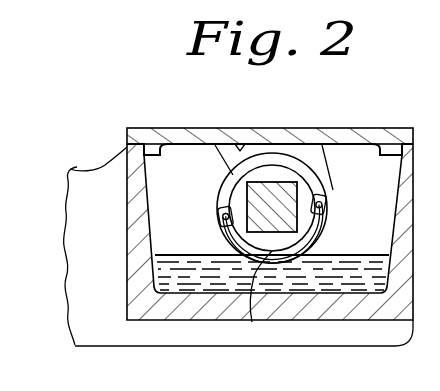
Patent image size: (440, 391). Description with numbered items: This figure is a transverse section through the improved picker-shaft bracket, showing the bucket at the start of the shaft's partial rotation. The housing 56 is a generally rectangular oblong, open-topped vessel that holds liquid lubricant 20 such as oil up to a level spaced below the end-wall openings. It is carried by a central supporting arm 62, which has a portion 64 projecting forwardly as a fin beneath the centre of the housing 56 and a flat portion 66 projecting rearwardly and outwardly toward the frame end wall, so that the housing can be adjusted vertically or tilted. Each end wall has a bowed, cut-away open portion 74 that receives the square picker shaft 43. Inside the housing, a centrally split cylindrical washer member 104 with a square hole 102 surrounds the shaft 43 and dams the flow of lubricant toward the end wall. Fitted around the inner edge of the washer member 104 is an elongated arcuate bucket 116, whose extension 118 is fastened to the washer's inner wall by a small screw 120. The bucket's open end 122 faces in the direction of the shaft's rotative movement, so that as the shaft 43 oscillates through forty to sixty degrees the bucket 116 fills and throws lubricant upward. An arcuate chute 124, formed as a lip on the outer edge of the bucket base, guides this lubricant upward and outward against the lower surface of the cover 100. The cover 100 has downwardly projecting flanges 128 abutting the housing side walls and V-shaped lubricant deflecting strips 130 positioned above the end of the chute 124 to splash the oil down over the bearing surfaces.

The liquid 20 is at (213, 318).
The picker shaft 43 is at (320, 187).
The housing 56 is at (342, 296).
The central supporting arm 62 is at (77, 167).
The forwardly projecting portion 64 is at (273, 343).
The flat portion 66 is at (93, 338).
The open portion 74 is at (318, 153).
The cover 100 is at (242, 147).
The hole 102 is at (233, 191).
The washer member 104 is at (228, 176).
The bucket 116 is at (316, 249).
The extension 118 is at (220, 216).
The small screw 120 is at (326, 210).
The open end 122 is at (253, 297).
The arcuate chute 124 is at (238, 238).
The flanges 128 is at (156, 143).
The lubricant deflecting strips 130 is at (262, 141).